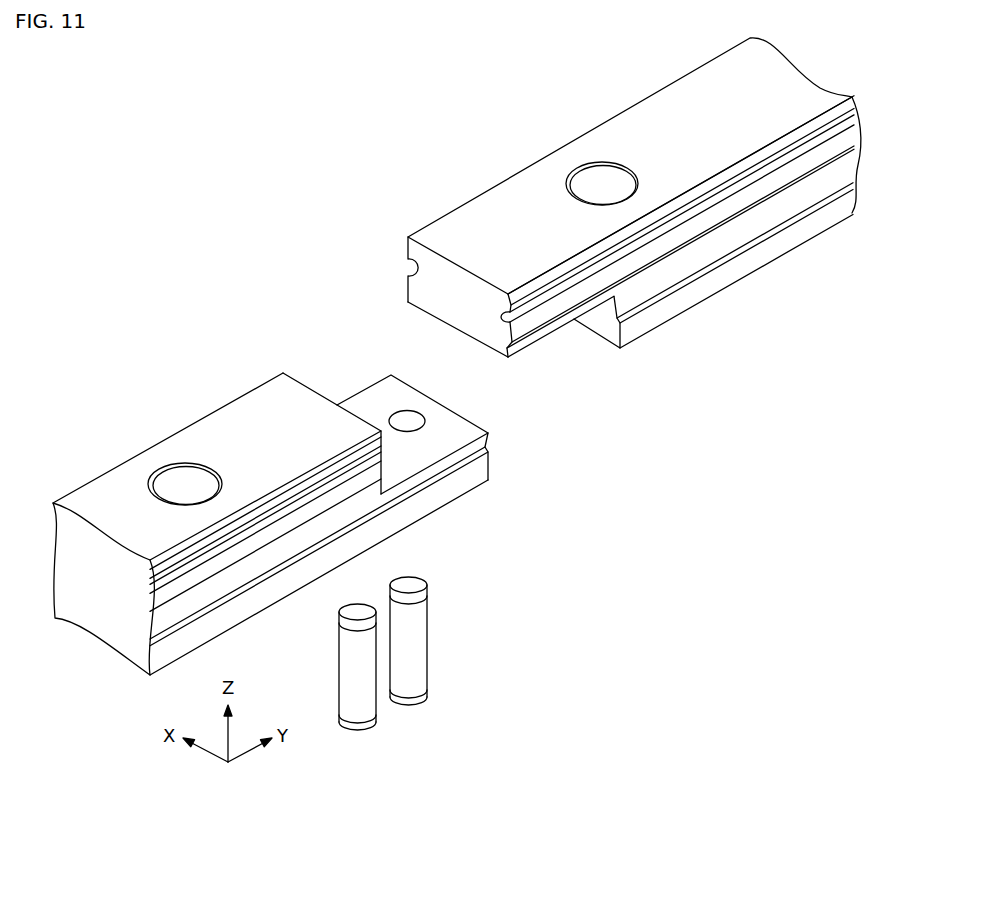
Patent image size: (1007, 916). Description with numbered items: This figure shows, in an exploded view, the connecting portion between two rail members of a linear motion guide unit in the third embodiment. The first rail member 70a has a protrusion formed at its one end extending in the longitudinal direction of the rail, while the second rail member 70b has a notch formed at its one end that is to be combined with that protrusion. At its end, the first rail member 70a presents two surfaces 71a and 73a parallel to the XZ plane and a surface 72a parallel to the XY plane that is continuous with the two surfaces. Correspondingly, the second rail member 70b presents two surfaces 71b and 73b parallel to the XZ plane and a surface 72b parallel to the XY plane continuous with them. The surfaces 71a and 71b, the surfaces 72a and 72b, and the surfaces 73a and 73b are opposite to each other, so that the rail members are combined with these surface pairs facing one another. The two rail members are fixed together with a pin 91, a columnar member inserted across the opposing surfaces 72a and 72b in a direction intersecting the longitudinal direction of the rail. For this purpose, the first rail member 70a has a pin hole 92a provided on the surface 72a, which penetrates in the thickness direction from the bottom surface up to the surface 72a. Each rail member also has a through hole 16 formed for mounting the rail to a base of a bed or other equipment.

The first rail member 70a is at (283, 452).
The second rail member 70b is at (686, 139).
The surface 71a is at (314, 392).
The surface 71b is at (413, 290).
The surface 72a is at (412, 457).
The surface 72b is at (521, 350).
The surface 73a is at (487, 442).
The surface 73b is at (603, 330).
The through hole 16 is at (183, 482).
The pin hole 92a is at (403, 420).
The pin 91 is at (408, 645).